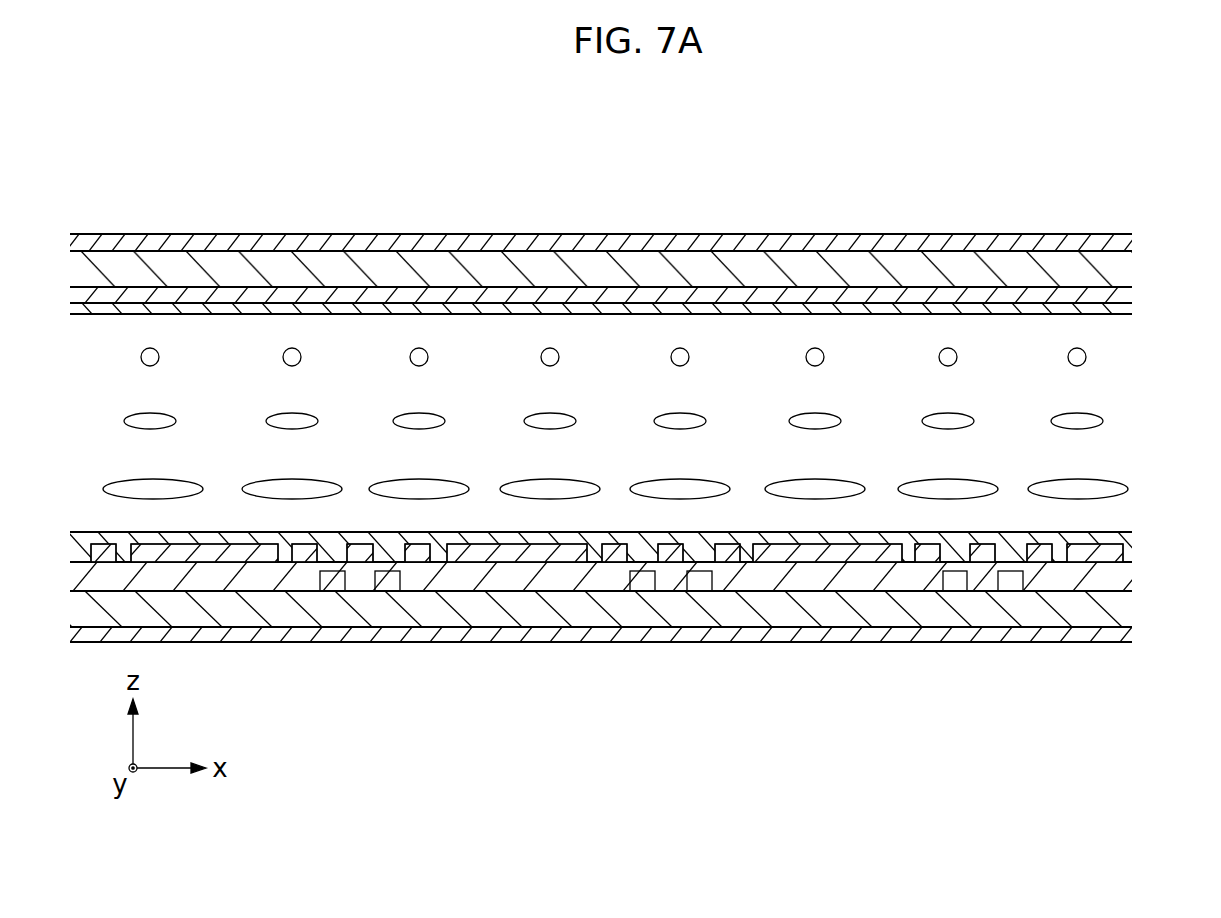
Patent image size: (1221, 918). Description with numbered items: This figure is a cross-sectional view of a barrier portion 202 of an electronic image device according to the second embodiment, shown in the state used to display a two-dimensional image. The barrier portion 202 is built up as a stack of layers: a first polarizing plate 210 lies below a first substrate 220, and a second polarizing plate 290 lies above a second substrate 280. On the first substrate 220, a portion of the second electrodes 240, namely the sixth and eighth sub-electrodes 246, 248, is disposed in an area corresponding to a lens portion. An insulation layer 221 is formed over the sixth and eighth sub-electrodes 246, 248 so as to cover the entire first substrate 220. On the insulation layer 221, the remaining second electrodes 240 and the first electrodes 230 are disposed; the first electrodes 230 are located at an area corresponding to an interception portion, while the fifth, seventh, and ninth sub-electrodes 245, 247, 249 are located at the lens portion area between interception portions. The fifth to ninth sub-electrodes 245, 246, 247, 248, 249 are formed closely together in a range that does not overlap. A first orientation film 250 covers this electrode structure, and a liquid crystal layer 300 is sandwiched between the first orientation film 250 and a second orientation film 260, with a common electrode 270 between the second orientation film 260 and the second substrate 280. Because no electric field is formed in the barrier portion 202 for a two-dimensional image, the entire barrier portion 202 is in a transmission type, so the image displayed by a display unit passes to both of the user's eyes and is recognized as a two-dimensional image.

The barrier portion 202 is at (658, 182).
The first polarizing plate 210 is at (1134, 636).
The first substrate 220 is at (1130, 608).
The insulation layer 221 is at (1115, 590).
The first electrodes 230 is at (830, 563).
The second electrodes 240 is at (660, 660).
The fifth sub-electrode 245 is at (612, 563).
The sixth sub-electrode 246 is at (640, 592).
The seventh sub-electrode 247 is at (670, 563).
The eighth sub-electrode 248 is at (690, 633).
The ninth sub-electrode 249 is at (727, 563).
The first orientation film 250 is at (1134, 543).
The second orientation film 260 is at (1134, 318).
The common electrode 270 is at (1134, 298).
The second substrate 280 is at (1130, 270).
The second polarizing plate 290 is at (1134, 245).
The liquid crystal layer 300 is at (1139, 322).